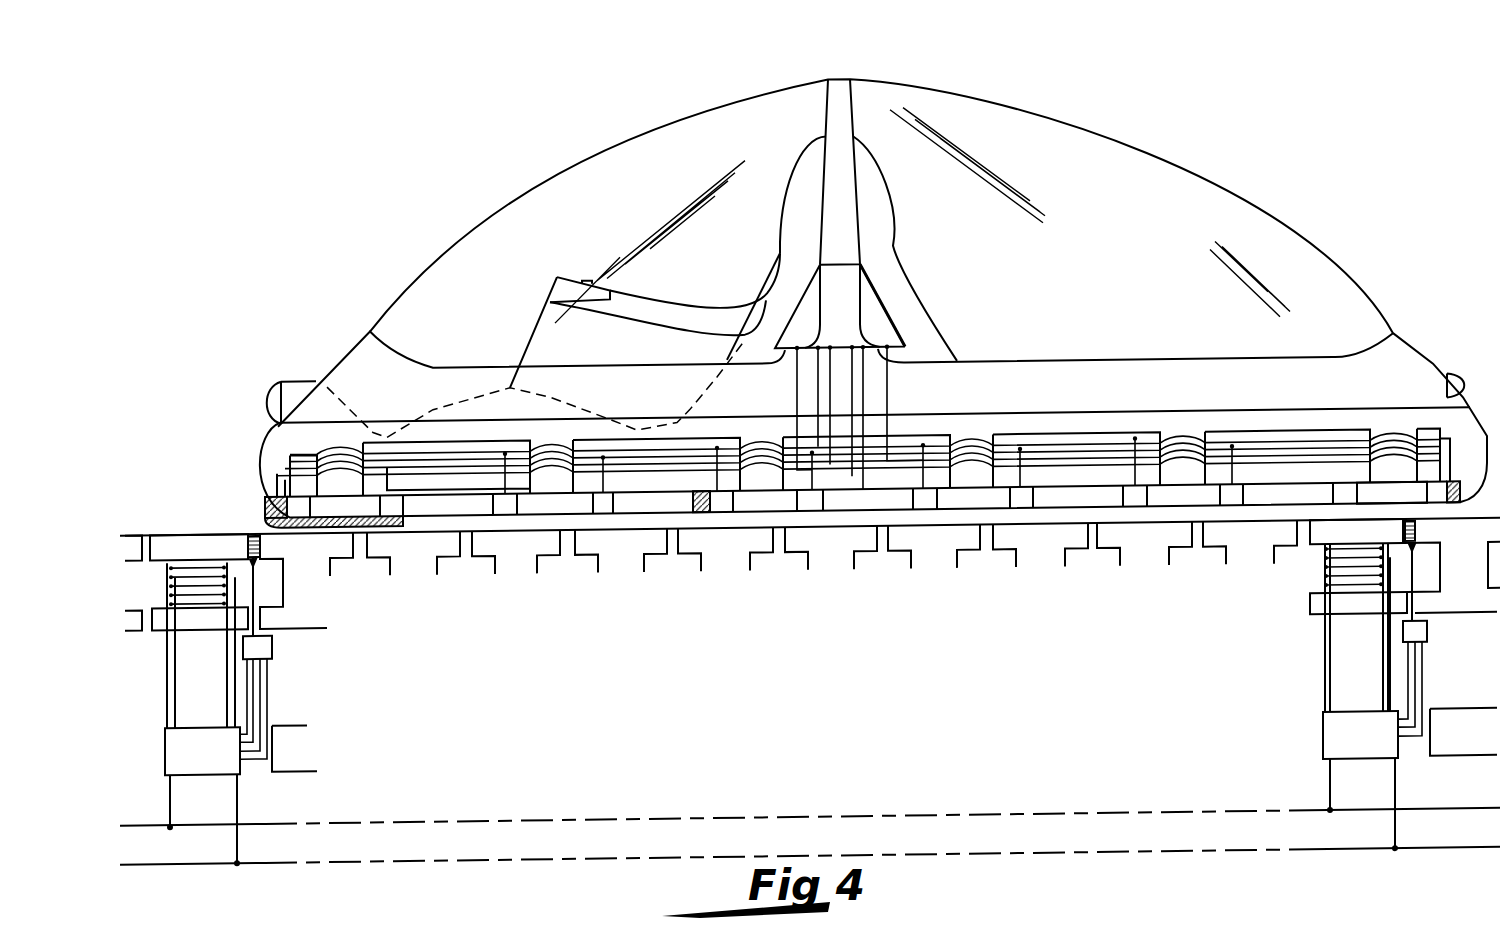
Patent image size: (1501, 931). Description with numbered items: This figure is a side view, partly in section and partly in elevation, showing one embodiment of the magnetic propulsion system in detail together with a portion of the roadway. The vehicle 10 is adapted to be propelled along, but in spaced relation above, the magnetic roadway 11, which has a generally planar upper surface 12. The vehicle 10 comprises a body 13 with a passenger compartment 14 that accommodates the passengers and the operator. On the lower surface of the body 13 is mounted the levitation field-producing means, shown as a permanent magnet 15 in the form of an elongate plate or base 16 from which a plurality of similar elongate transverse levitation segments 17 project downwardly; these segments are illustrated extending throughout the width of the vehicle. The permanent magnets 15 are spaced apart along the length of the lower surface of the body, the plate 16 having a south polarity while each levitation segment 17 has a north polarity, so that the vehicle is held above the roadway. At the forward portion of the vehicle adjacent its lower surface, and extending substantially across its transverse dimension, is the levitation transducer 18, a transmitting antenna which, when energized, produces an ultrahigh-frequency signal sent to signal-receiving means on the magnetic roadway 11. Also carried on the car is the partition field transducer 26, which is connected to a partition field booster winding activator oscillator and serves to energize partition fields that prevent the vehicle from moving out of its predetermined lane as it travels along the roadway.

The vehicle 10 is at (1172, 116).
The magnetic roadway 11 is at (170, 514).
The upper surface 12 is at (846, 527).
The body 13 is at (334, 350).
The passenger compartment 14 is at (540, 203).
The permanent magnet 15 is at (1393, 434).
The plate 16 is at (1306, 417).
The levitation segment 17 is at (1400, 503).
The levitation transducer 18 is at (275, 491).
The partition field transducer 26 is at (280, 505).